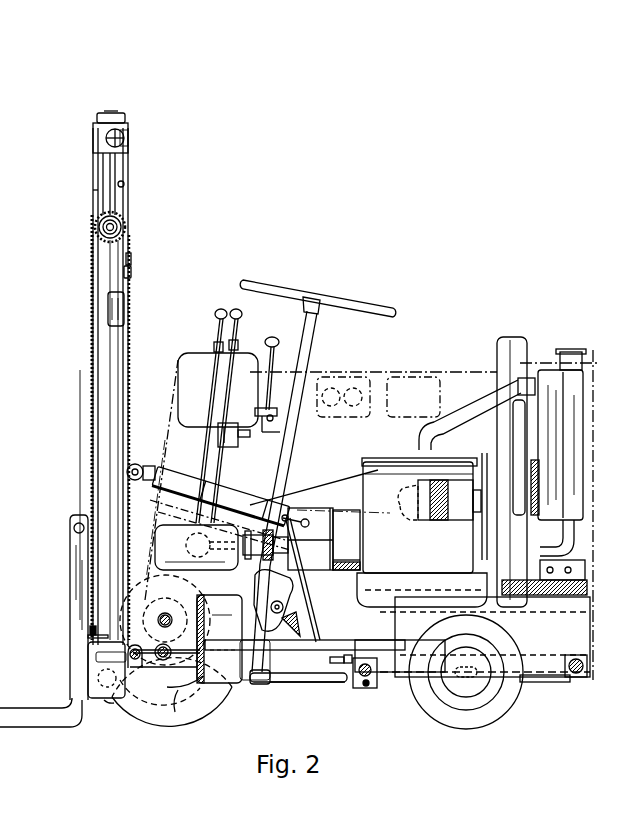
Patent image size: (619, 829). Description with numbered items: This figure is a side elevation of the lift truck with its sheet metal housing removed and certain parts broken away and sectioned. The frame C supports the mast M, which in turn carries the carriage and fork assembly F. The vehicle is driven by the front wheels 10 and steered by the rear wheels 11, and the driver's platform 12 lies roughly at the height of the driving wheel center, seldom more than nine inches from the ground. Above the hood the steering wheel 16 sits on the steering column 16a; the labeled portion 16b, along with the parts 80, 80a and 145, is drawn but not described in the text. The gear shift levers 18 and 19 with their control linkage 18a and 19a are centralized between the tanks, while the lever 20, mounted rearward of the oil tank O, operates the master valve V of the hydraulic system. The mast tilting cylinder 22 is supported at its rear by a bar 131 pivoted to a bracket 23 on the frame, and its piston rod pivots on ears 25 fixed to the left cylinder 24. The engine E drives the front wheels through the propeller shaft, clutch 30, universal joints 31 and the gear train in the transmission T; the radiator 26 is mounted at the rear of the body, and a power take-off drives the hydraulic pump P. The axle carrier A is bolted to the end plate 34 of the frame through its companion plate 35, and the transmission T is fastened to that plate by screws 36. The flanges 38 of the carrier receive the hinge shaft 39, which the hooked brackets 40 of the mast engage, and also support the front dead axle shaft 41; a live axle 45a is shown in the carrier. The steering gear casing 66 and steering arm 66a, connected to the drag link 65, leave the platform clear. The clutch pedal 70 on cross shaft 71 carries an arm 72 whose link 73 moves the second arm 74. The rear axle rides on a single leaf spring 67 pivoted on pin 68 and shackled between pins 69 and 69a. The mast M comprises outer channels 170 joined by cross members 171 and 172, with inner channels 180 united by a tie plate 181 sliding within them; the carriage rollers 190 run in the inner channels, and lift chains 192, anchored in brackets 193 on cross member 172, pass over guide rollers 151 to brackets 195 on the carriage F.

The driving wheels 10 is at (140, 724).
The rear wheels 11 is at (500, 719).
The driver's platform 12 is at (298, 648).
The steering wheel 16 is at (352, 297).
The steering column 16a is at (296, 459).
The steering column upper portion 16b is at (314, 341).
The gear shift lever 18 is at (236, 309).
The control linkage 18a is at (211, 471).
The gear shift lever 19 is at (221, 309).
The control linkage 19a is at (220, 493).
The hydraulic control lever 20 is at (273, 338).
The mast tilting cylinder 22 is at (250, 490).
The bracket 23 is at (405, 557).
The left cylinder 24 is at (128, 357).
The ears 25 is at (134, 464).
The radiator 26 is at (582, 377).
The clutch 30 is at (333, 557).
The universal joints 31 is at (250, 558).
The end plate 34 is at (230, 630).
The companion plate 35 is at (177, 623).
The screws 36 is at (197, 655).
The flanges 38 is at (190, 702).
The hinge shaft 39 is at (138, 668).
The brackets 40 is at (124, 702).
The front dead axle shaft 41 is at (163, 661).
The live axle 45a is at (168, 612).
The drag link 65 is at (336, 684).
The gear casing 66 is at (276, 601).
The steering arm 66a is at (282, 680).
The leaf spring 67 is at (548, 683).
The pin 68 is at (577, 676).
The pin 69 is at (372, 682).
The pin 69a is at (367, 690).
The clutch pedal 70 is at (258, 675).
The cross shaft 71 is at (394, 656).
The arm 72 is at (334, 664).
The link 73 is at (311, 596).
The second arm 74 is at (302, 528).
The pedal pivot 80 is at (284, 613).
The pedal pad 80a is at (300, 630).
The bar 131 is at (313, 503).
The inner mast 145 is at (108, 168).
The guide rollers 151 is at (126, 228).
The outer channel members 170 is at (128, 165).
The cross member 171 is at (133, 140).
The second cross member 172 is at (131, 259).
The inner channels 180 is at (125, 185).
The tie plate 181 is at (100, 116).
The rollers 190 is at (75, 543).
The lift chains 192 is at (92, 456).
The brackets 193 is at (128, 275).
The brackets 195 is at (92, 634).
The axle carrier A is at (178, 714).
The frame C is at (553, 601).
The engine E is at (360, 470).
The carriage and fork assembly F is at (66, 610).
The mast M is at (90, 190).
The oil tank O is at (176, 391).
The hydraulic pump P is at (578, 552).
The transmission T is at (165, 539).
The master valve V is at (226, 451).